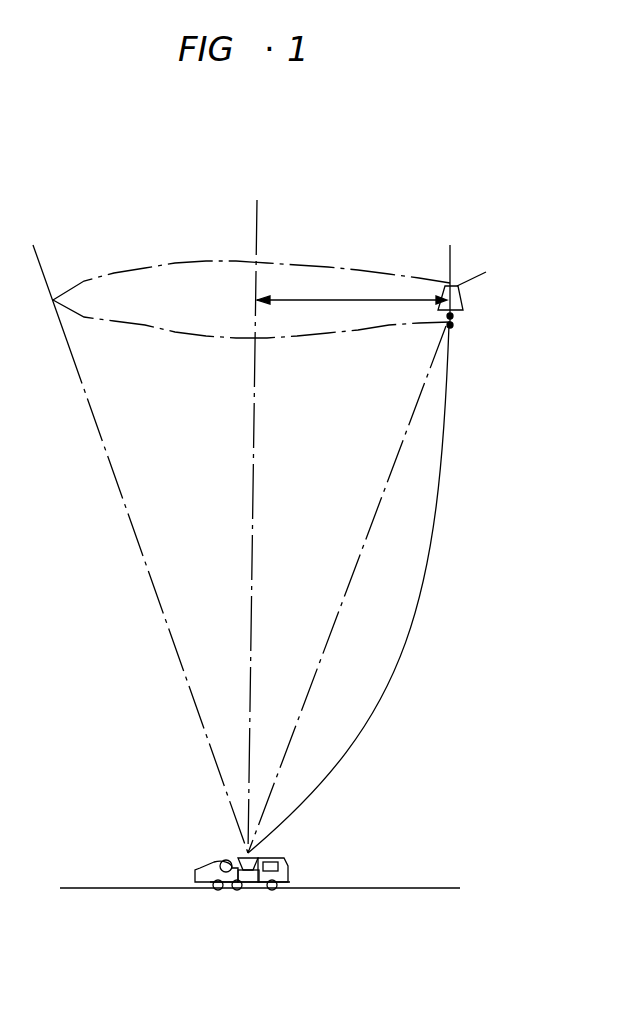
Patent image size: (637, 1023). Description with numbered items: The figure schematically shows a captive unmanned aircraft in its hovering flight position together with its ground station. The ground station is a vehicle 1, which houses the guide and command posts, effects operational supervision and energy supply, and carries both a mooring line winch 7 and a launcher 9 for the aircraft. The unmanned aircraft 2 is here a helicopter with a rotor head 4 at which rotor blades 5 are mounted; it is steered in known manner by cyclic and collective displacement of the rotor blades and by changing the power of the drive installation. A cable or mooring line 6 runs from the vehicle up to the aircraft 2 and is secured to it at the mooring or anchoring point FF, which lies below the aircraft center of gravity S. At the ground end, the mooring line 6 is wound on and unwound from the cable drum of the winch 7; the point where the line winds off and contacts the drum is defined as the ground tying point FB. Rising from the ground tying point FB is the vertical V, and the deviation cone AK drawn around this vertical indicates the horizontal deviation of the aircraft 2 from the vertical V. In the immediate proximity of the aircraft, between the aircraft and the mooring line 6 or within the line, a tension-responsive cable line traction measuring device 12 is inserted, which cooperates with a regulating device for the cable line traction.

The vehicle 1 is at (219, 902).
The unmanned aircraft 2 is at (457, 251).
The rotor head 4 is at (447, 284).
The rotor blades 5 is at (486, 272).
The aircraft center of gravity S is at (458, 300).
The mooring or anchoring point FF is at (453, 316).
The cable line traction measuring device 12 is at (453, 326).
The deviation cone AK is at (290, 262).
The vertical V is at (254, 450).
The mooring line 6 is at (443, 450).
The ground tying point FB is at (238, 857).
The launcher 9 is at (268, 856).
The mooring line winch 7 is at (206, 863).